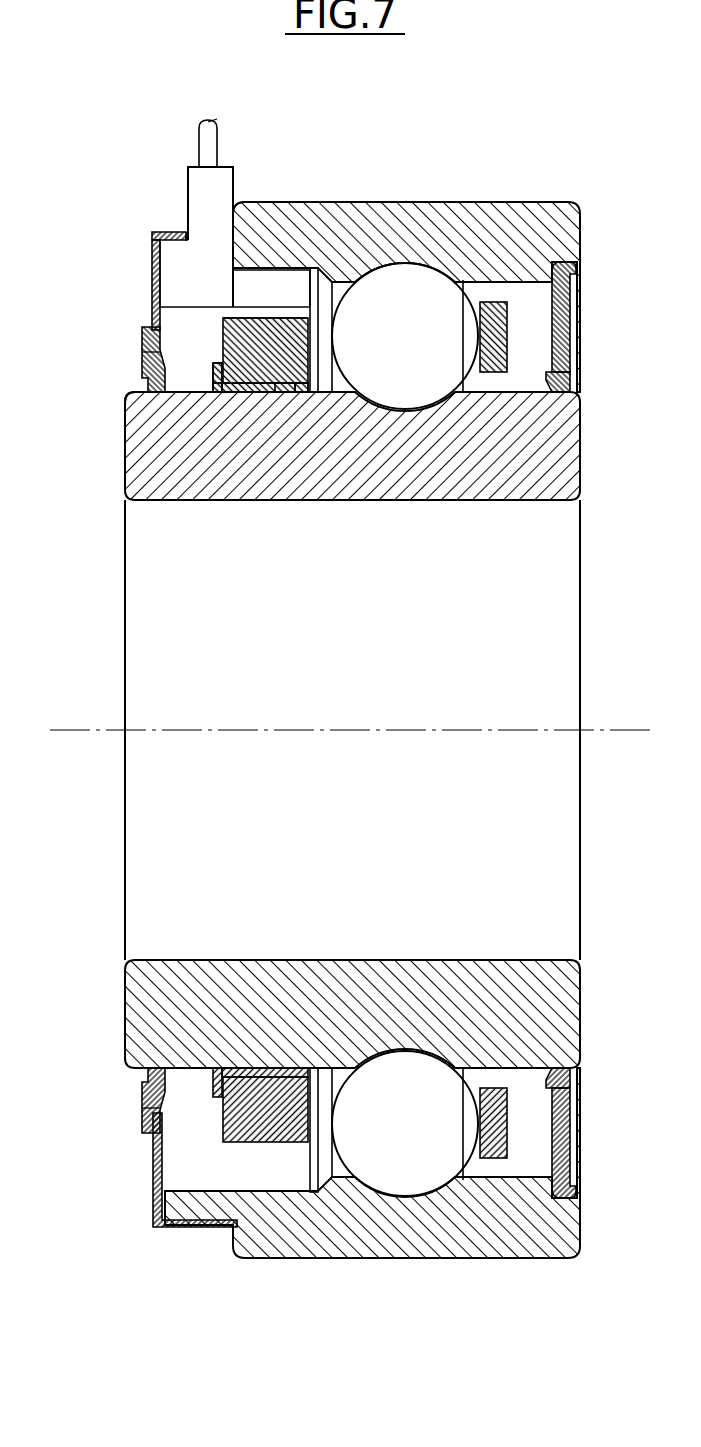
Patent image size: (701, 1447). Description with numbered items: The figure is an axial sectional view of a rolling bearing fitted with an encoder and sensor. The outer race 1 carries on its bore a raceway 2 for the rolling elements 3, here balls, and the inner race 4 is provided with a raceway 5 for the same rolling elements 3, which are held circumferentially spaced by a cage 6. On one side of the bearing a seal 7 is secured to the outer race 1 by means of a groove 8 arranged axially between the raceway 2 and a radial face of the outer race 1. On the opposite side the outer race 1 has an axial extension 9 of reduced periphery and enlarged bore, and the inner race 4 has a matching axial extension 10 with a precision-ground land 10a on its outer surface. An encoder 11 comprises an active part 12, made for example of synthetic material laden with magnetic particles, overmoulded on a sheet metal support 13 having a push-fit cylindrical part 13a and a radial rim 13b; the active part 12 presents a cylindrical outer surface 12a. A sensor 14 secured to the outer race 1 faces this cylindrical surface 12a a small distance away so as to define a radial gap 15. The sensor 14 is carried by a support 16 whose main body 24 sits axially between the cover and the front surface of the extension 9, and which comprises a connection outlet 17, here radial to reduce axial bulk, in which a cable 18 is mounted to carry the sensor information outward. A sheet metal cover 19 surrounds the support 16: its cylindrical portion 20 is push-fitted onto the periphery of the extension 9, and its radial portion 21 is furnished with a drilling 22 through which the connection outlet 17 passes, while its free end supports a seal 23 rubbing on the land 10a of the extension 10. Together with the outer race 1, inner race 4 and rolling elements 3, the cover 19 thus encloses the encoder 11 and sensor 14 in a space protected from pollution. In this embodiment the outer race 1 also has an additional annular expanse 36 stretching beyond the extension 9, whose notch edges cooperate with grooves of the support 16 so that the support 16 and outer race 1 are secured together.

The outer race 1 is at (383, 227).
The raceway 2 is at (393, 318).
The rolling elements 3 is at (427, 402).
The inner race 4 is at (530, 325).
The raceway 5 is at (497, 317).
The cage 6 is at (527, 443).
The seal 7 is at (570, 307).
The groove 8 is at (585, 277).
The axial extension 9 is at (275, 240).
The axial extension 10 is at (147, 478).
The precision-ground land 10a is at (132, 452).
The encoder 11 is at (204, 375).
The active part 12 is at (266, 393).
The cylindrical outer surface 12a is at (302, 386).
The sheet metal support 13 is at (297, 392).
The push-fit cylindrical part 13a is at (257, 393).
The radial rim 13b is at (214, 393).
The sensor 14 is at (290, 288).
The radial gap 15 is at (265, 311).
The support 16 is at (190, 288).
The connection outlet 17 is at (212, 193).
The cable 18 is at (208, 162).
The cover 19 is at (110, 228).
The cylindrical portion 20 is at (173, 265).
The radial portion 21 is at (151, 257).
The drilling 22 is at (188, 232).
The seal 23 is at (143, 363).
The main body 24 is at (173, 244).
The additional expanse 36 is at (225, 1205).